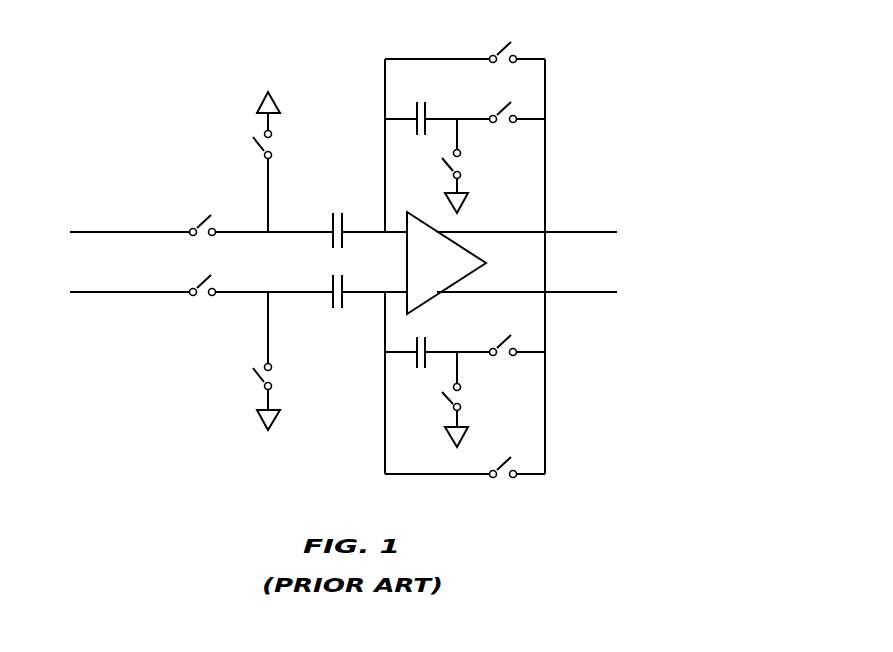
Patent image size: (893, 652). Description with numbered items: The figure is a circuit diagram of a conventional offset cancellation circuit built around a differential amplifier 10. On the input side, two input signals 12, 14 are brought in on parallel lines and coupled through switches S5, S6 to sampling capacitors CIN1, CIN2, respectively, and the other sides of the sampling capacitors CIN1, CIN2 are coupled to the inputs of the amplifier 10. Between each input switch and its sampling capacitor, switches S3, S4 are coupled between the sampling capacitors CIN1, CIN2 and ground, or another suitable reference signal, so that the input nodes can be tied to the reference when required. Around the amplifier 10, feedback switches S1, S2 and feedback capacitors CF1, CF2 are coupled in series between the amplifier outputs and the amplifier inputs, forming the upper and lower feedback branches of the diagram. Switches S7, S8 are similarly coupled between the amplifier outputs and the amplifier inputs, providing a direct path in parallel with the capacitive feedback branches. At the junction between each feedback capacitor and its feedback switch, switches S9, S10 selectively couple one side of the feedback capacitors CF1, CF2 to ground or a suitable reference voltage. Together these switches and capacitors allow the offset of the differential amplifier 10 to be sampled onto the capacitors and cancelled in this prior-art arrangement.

The differential amplifier 10 is at (477, 255).
The input signal 12 is at (100, 232).
The input signal 14 is at (100, 292).
The feedback switch S1 is at (504, 101).
The feedback switch S2 is at (504, 335).
The switch S3 is at (245, 145).
The switch S4 is at (245, 379).
The switch S5 is at (203, 215).
The switch S6 is at (203, 275).
The switch S7 is at (505, 41).
The switch S8 is at (504, 458).
The switch S9 is at (434, 164).
The switch S10 is at (429, 398).
The feedback capacitor CF1 is at (417, 107).
The feedback capacitor CF2 is at (437, 341).
The sampling capacitor CIN1 is at (335, 219).
The sampling capacitor CIN2 is at (335, 307).